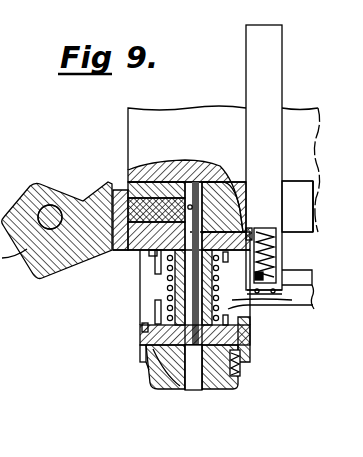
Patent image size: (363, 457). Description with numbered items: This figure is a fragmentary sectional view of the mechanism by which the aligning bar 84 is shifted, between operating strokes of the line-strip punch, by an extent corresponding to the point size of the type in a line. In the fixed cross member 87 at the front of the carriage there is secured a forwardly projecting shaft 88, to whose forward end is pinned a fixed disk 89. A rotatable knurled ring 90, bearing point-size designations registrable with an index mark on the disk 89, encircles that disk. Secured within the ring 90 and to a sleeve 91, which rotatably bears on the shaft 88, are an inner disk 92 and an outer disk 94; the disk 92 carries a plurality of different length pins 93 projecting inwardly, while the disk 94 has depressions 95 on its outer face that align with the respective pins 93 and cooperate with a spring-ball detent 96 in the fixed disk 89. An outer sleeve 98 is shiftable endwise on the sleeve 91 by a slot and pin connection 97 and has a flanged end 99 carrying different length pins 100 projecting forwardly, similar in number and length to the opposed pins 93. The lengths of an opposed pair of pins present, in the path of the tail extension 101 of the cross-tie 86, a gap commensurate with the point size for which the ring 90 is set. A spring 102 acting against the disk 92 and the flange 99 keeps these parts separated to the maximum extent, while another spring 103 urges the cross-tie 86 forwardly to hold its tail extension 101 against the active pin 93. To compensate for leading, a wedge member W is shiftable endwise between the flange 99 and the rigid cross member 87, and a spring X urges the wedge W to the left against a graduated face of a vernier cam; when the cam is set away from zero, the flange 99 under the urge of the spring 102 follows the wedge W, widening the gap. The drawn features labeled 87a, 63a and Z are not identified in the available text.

The bar 84 is at (279, 72).
The dome cap 87a is at (236, 195).
The housing wall 63a is at (318, 168).
The fixed cross member 87 is at (318, 203).
The spring 103 is at (282, 244).
The pins 100 is at (158, 262).
The tail extension 101 is at (258, 301).
The cross-tie 86 is at (293, 303).
The pins 93 is at (145, 326).
The spring-ball detent 96 is at (243, 360).
The flanged end 99 is at (150, 253).
The spring 102 is at (172, 280).
The outer sleeve 98 is at (178, 290).
The slot and pin connection 97 is at (158, 305).
The inner disk 92 is at (150, 334).
The outer disk 94 is at (152, 350).
The knurled ring 90 is at (145, 360).
The depressions 95 is at (150, 370).
The fixed disk 89 is at (150, 380).
The sleeve 91 is at (183, 346).
The shaft 88 is at (181, 360).
The wedge member W is at (121, 195).
The hole Z is at (50, 205).
The spring X is at (163, 155).